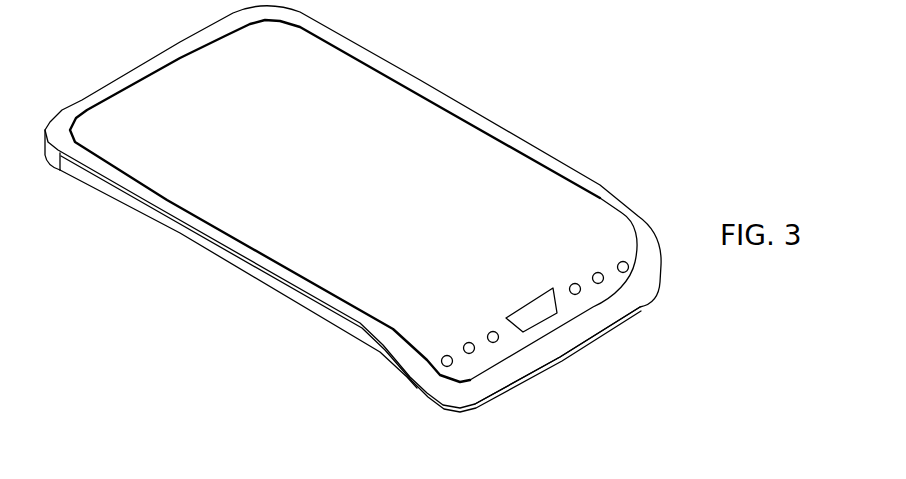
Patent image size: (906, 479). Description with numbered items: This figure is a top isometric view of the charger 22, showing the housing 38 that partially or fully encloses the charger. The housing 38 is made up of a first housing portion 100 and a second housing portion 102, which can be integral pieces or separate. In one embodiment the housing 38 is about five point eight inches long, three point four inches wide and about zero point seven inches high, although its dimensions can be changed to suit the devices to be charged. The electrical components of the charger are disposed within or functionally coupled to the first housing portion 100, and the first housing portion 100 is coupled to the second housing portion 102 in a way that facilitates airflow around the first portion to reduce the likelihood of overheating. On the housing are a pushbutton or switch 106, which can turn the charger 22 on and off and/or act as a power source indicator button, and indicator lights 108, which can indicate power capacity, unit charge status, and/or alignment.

The charger 22 is at (556, 63).
The housing 38 is at (581, 174).
The first housing portion 100 is at (412, 110).
The second housing portion 102 is at (633, 302).
The pushbutton or switch 106 is at (543, 319).
The indicator lights 108 is at (629, 262).